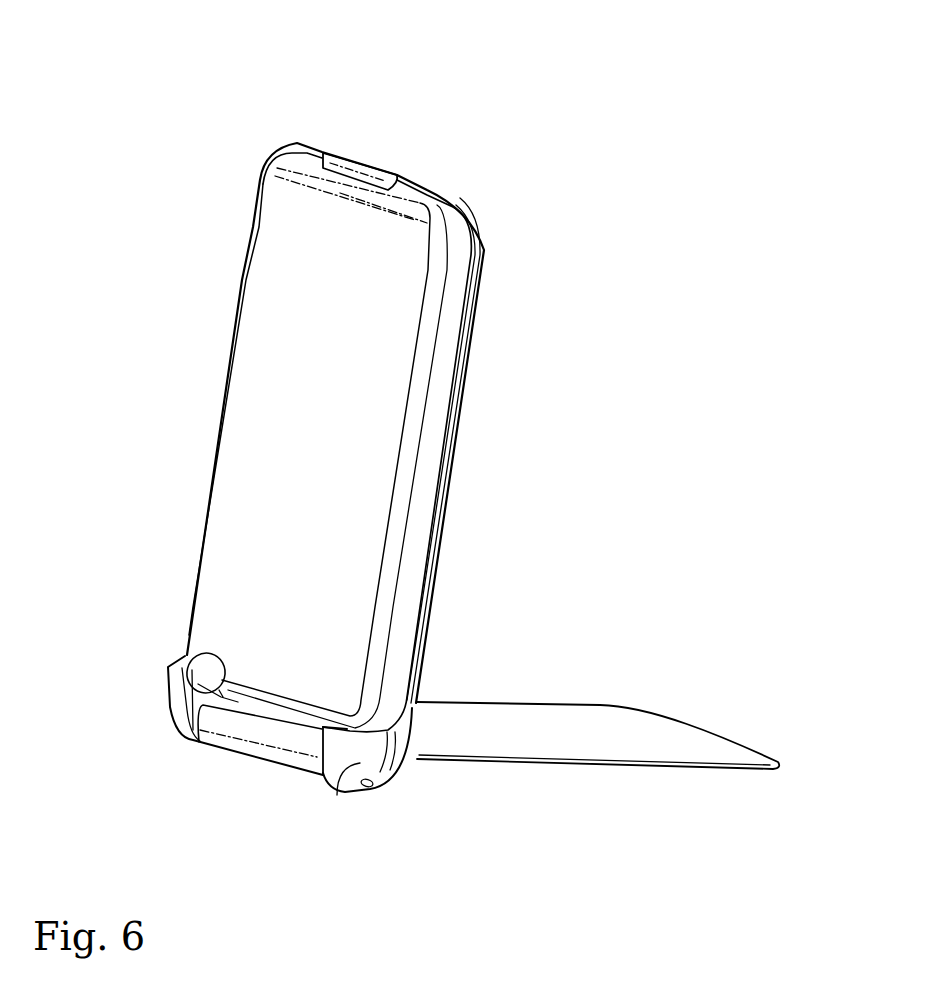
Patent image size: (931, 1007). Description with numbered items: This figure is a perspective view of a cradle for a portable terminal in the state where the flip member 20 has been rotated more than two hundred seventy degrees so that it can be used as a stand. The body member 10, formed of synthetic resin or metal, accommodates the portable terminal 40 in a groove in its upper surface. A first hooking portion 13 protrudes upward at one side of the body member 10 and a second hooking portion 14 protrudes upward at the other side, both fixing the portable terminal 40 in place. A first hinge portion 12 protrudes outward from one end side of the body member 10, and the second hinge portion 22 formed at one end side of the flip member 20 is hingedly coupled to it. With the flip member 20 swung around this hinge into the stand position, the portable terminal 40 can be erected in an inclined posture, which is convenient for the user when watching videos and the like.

The body member 10 is at (458, 420).
The first hinge portion 12 is at (358, 765).
The first hooking portion 13 is at (363, 168).
The second hooking portion 14 is at (187, 653).
The flip member 20 is at (590, 728).
The second hinge portion 22 is at (262, 735).
The portable terminal 40 is at (297, 398).